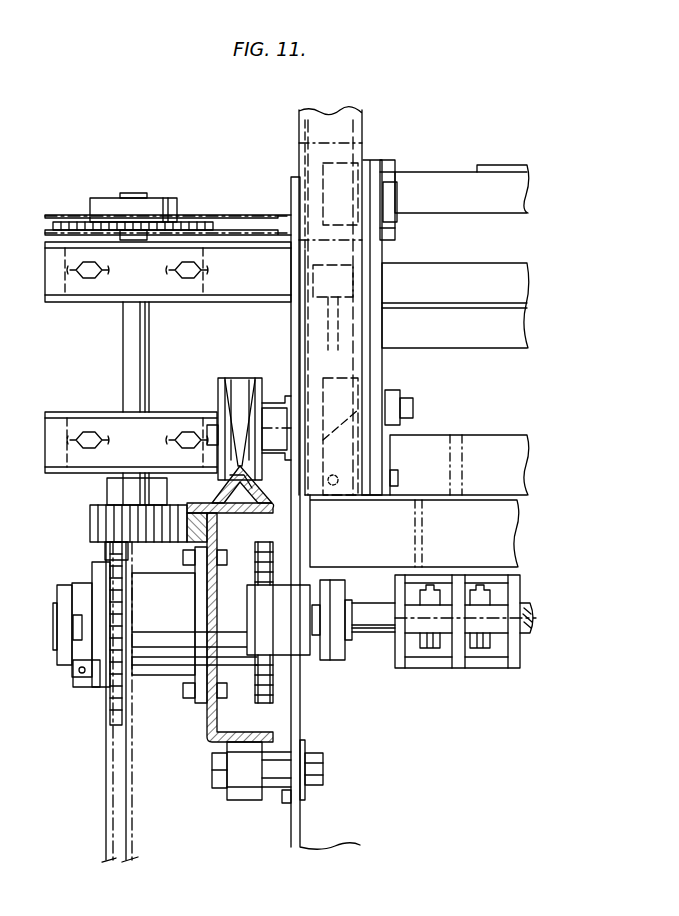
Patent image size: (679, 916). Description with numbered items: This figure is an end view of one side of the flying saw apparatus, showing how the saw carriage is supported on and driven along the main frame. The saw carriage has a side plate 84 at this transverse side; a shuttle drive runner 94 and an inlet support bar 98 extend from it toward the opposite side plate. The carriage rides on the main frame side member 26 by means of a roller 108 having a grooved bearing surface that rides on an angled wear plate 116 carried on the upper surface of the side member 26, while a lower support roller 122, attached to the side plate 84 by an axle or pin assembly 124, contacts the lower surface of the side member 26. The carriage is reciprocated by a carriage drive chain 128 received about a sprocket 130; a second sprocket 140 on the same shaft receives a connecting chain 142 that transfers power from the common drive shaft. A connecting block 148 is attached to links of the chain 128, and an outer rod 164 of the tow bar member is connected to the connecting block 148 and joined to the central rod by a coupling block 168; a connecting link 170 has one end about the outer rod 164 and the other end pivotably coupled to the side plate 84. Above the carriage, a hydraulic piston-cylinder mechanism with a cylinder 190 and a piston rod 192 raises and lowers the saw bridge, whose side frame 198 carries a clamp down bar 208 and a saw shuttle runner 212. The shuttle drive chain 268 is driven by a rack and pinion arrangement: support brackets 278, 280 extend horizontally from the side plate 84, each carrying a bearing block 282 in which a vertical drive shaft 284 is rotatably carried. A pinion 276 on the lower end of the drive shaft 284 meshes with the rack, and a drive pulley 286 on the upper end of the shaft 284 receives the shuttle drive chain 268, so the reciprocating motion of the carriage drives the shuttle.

The side member 26 is at (210, 722).
The side plate 84 is at (297, 833).
The shuttle drive runner 94 is at (460, 288).
The inlet support bar 98 is at (370, 540).
The roller 108 is at (250, 380).
The angled wear plate 116 is at (222, 494).
The lower support roller 122 is at (247, 803).
The axle or pin assembly 124 is at (287, 772).
The carriage drive chain 128 is at (265, 542).
The sprocket 130 is at (253, 690).
The second sprocket 140 is at (112, 703).
The connecting chain 142 is at (107, 783).
The connecting block 148 is at (303, 645).
The outer rod section 164 is at (375, 628).
The coupling block 168 is at (458, 668).
The connecting link 170 is at (335, 597).
The cylinder 190 is at (299, 128).
The piston rod 192 is at (318, 365).
The side frame 198 is at (383, 378).
The clamp down bar 208 is at (450, 471).
The saw shuttle runner 212 is at (462, 200).
The shuttle drive chain 268 is at (256, 213).
The pinion 276 is at (92, 522).
The support bracket 278 is at (57, 412).
The support bracket 280 is at (55, 305).
The bearing block 282 is at (118, 277).
The drive shaft 284 is at (146, 322).
The drive pulley 286 is at (68, 218).